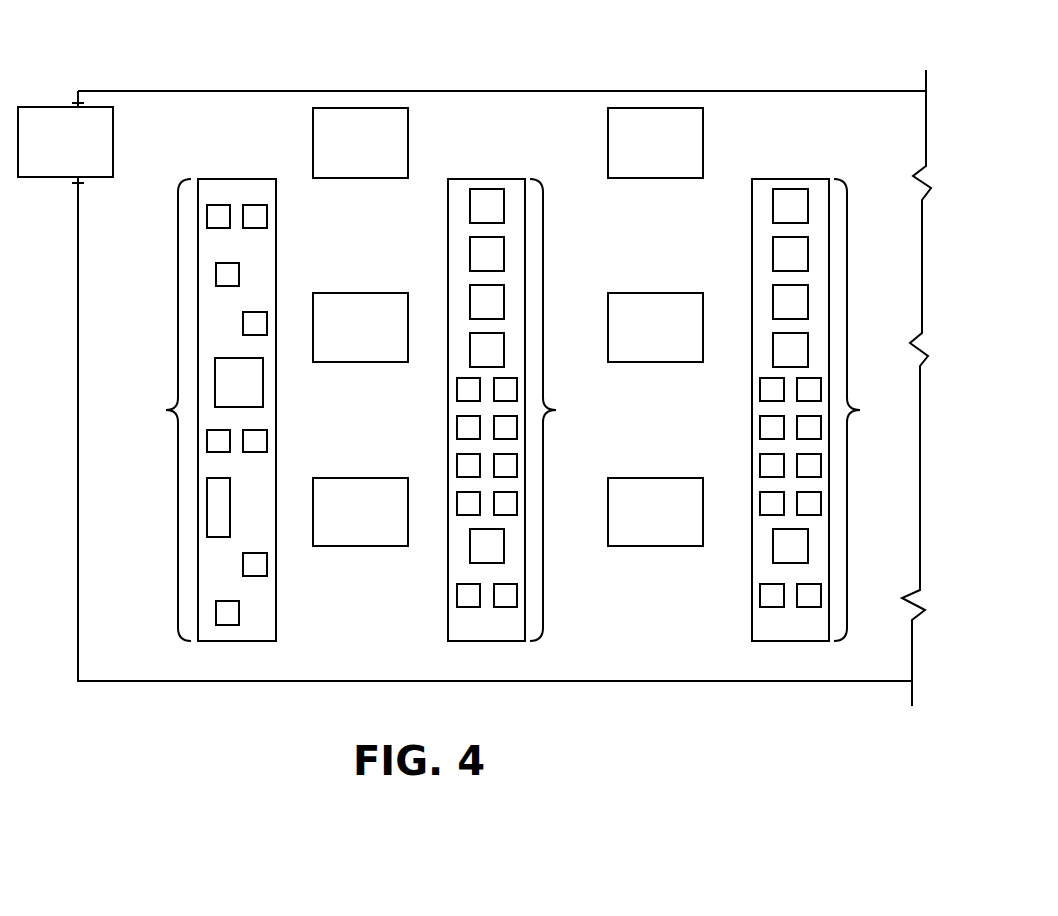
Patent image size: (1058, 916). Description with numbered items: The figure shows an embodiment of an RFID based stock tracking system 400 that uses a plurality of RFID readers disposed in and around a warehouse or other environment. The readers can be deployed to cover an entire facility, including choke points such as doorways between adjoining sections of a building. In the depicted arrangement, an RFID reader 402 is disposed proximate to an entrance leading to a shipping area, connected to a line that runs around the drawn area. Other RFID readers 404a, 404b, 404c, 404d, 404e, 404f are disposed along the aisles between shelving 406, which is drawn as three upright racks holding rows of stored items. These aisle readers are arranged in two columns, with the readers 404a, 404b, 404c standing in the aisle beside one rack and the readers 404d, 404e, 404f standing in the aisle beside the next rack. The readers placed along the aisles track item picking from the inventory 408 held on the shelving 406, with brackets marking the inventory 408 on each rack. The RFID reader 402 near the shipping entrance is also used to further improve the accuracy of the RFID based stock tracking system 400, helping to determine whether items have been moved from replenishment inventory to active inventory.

The RFID based stock tracking system 400 is at (868, 41).
The RFID reader 402 is at (50, 106).
The RFID reader 404a is at (409, 113).
The RFID reader 404b is at (359, 293).
The RFID reader 404c is at (360, 478).
The RFID reader 404d is at (661, 108).
The RFID reader 404e is at (658, 293).
The RFID reader 404f is at (653, 478).
The shelving 406 is at (277, 197).
The inventory 408 is at (513, 410).